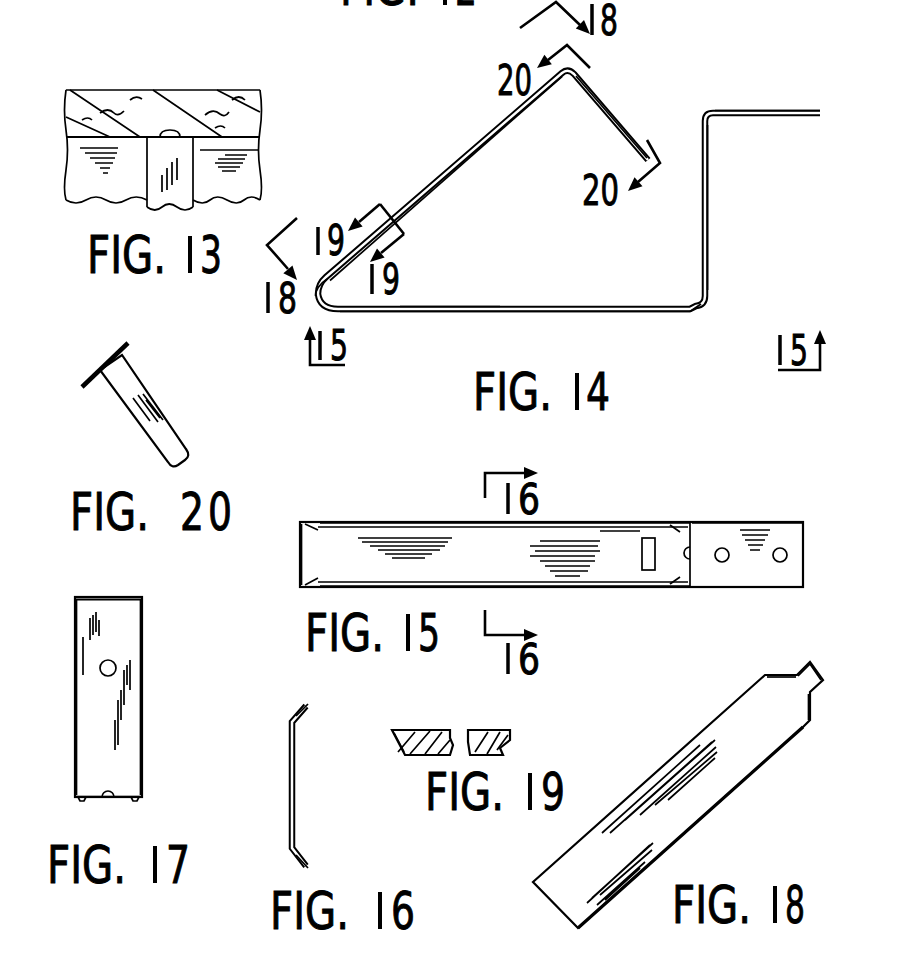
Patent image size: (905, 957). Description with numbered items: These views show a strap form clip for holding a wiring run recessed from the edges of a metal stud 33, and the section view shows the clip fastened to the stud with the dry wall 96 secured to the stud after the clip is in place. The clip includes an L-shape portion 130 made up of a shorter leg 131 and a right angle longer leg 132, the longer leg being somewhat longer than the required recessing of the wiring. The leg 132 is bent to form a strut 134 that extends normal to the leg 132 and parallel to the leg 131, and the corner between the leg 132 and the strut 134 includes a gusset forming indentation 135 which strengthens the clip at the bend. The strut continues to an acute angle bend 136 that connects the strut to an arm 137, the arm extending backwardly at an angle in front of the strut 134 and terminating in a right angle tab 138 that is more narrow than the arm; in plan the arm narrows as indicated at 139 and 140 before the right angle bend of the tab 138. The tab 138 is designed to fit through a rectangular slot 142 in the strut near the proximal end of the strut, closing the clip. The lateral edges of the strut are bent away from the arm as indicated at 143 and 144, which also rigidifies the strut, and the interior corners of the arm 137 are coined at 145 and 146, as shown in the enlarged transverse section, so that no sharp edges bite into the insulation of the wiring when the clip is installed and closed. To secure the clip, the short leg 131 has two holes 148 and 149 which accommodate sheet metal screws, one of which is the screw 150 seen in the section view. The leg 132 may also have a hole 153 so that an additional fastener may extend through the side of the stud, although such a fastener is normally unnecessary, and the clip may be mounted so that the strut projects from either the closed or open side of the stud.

In FIG. 13, the metal stud 33 is at (243, 172).
In FIG. 13, the dry wall 96 is at (193, 97).
In FIG. 14, the L-shape portion 130 is at (732, 166).
In FIG. 14, the shorter leg 131 is at (762, 113).
In FIG. 15, the shorter leg 131 is at (745, 523).
In FIG. 17, the shorter leg 131 is at (112, 597).
In FIG. 13, the longer leg 132 is at (152, 163).
In FIG. 14, the longer leg 132 is at (708, 240).
In FIG. 15, the longer leg 132 is at (690, 540).
In FIG. 17, the longer leg 132 is at (127, 625).
In FIG. 14, the strut 134 is at (500, 305).
In FIG. 15, the strut 134 is at (618, 540).
In FIG. 17, the strut 134 is at (90, 797).
In FIG. 16, the strut 134 is at (289, 780).
In FIG. 14, the gusset forming indentation 135 is at (695, 300).
In FIG. 15, the gusset forming indentation 135 is at (686, 560).
In FIG. 17, the gusset forming indentation 135 is at (112, 800).
In FIG. 14, the acute angle bend 136 is at (318, 296).
In FIG. 15, the acute angle bend 136 is at (300, 548).
In FIG. 14, the arm 137 is at (455, 160).
In FIG. 20, the arm 137 is at (112, 348).
In FIG. 19, the arm 137 is at (430, 730).
In FIG. 18, the arm 137 is at (745, 762).
In FIG. 14, the right angle tab 138 is at (612, 117).
In FIG. 20, the right angle tab 138 is at (137, 390).
In FIG. 18, the right angle tab 138 is at (812, 665).
In FIG. 18, the arm narrowing 139 is at (775, 675).
In FIG. 18, the arm narrowing 140 is at (810, 705).
In FIG. 15, the rectangular slot 142 is at (643, 558).
In FIG. 14, the bent lateral edge of strut 143 is at (455, 312).
In FIG. 15, the bent lateral edge of strut 143 is at (398, 522).
In FIG. 16, the bent lateral edge of strut 143 is at (298, 712).
In FIG. 15, the bent lateral edge of strut 144 is at (380, 587).
In FIG. 16, the bent lateral edge of strut 144 is at (296, 860).
In FIG. 19, the coined interior corner 145 is at (402, 750).
In FIG. 19, the coined interior corner 146 is at (505, 745).
In FIG. 15, the hole 148 is at (727, 560).
In FIG. 15, the hole 149 is at (787, 555).
In FIG. 13, the sheet metal screw 150 is at (170, 128).
In FIG. 17, the hole 153 is at (103, 677).